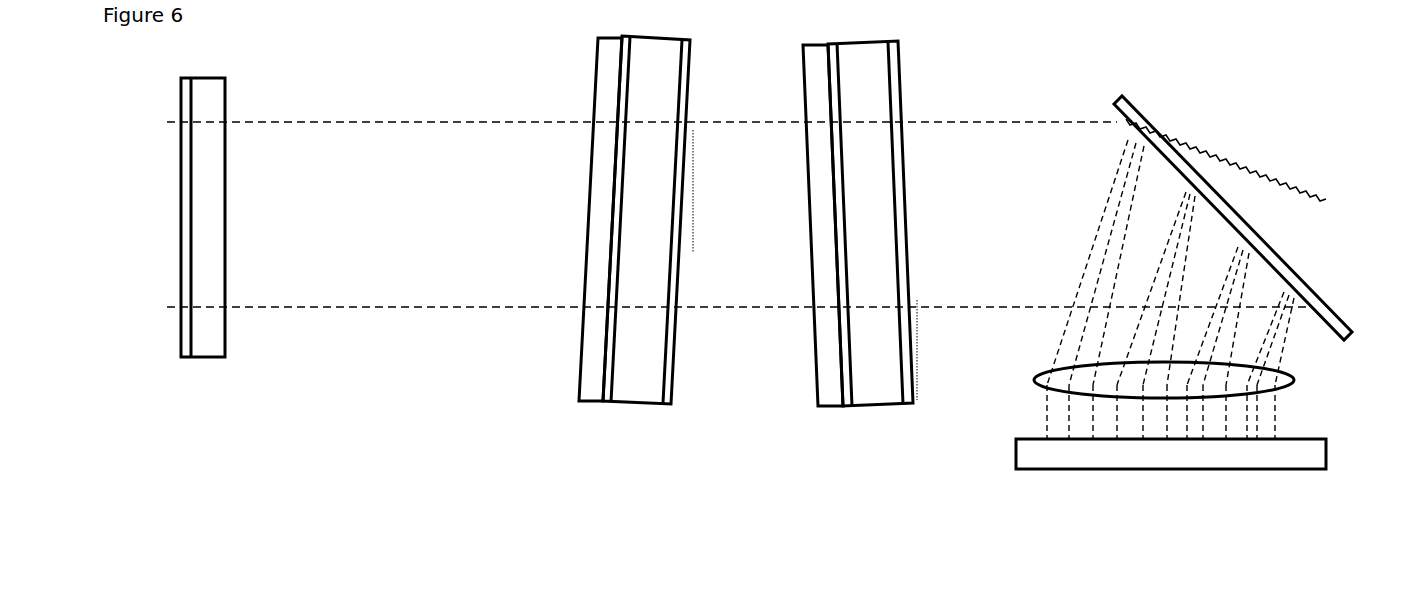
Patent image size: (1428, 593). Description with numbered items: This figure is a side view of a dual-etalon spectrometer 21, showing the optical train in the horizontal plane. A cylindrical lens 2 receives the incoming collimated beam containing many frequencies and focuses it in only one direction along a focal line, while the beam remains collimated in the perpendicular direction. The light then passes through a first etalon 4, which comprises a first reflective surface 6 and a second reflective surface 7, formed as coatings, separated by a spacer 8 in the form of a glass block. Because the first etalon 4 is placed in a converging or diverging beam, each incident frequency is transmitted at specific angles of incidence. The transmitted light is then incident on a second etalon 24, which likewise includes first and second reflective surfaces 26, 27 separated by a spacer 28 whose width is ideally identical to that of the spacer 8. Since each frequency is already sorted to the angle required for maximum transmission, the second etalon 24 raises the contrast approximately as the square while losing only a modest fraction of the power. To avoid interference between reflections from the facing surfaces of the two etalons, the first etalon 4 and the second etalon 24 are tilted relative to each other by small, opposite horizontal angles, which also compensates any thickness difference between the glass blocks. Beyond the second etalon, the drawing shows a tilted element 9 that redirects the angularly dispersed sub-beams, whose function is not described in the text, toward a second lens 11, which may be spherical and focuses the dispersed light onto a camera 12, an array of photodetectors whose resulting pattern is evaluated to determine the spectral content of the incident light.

The cylindrical lens 2 is at (205, 360).
The dual-etalon spectrometer 21 is at (443, 25).
The first etalon 4 is at (626, 241).
The first reflective surface 6 is at (598, 52).
The second reflective surface 7 is at (683, 82).
The spacer 8 is at (659, 208).
The second etalon 24 is at (852, 243).
The first reflective surface of second etalon 26 is at (815, 43).
The second reflective surface of second etalon 27 is at (898, 55).
The spacer of second etalon 28 is at (881, 212).
The grating / diffractive mirror 9 is at (1170, 142).
The second lens 11 is at (1043, 369).
The camera 12 is at (1325, 453).